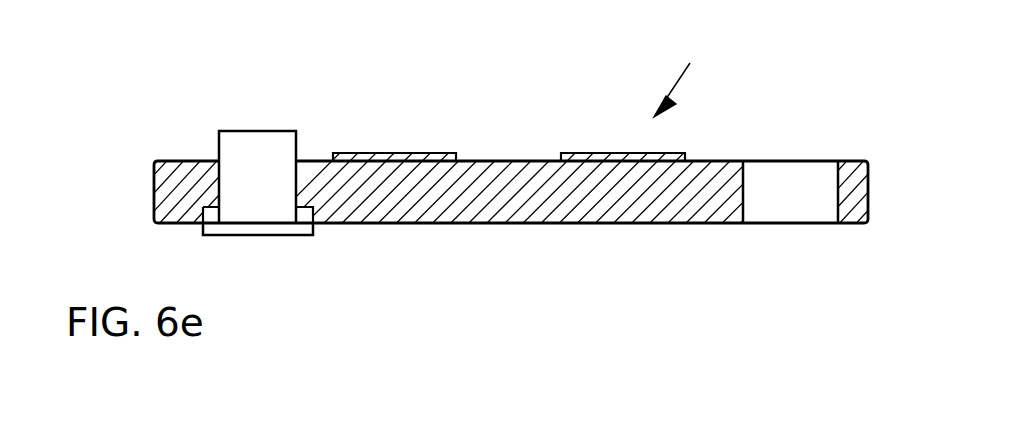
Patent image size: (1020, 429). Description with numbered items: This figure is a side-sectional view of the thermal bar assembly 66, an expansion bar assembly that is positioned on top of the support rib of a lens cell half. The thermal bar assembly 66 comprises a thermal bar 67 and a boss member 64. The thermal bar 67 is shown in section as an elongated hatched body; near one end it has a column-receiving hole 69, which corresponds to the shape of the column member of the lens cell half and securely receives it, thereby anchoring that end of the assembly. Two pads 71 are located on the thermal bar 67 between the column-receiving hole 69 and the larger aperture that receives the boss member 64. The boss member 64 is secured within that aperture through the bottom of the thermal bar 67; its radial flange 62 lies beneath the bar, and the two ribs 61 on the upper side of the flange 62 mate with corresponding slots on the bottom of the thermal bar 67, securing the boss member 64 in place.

The ribs 61 is at (203, 217).
The radial flange 62 is at (273, 230).
The boss member 64 is at (275, 137).
The thermal bar assembly 66 is at (690, 63).
The thermal bar 67 is at (517, 224).
The column-receiving hole 69 is at (779, 163).
The pads 71 is at (417, 155).